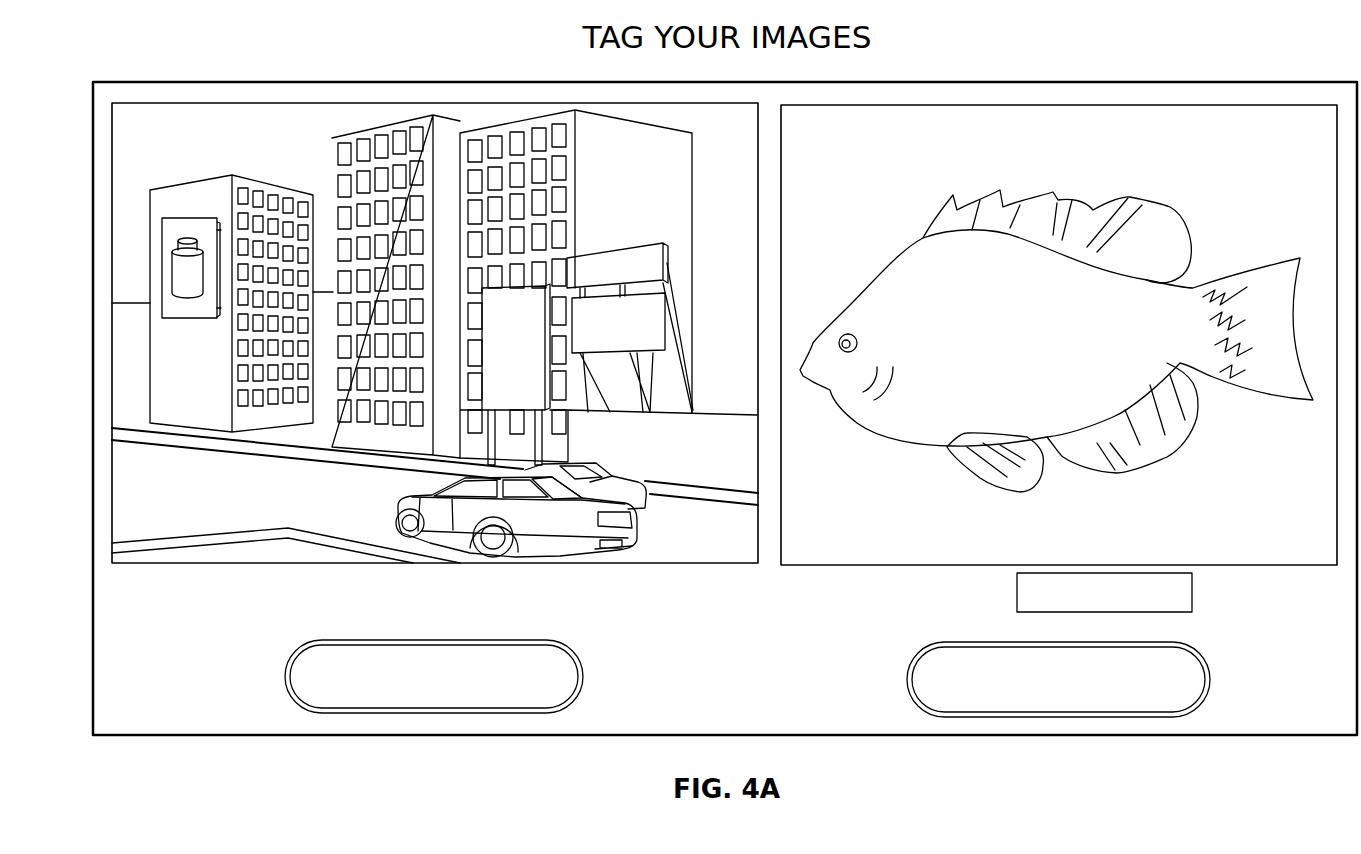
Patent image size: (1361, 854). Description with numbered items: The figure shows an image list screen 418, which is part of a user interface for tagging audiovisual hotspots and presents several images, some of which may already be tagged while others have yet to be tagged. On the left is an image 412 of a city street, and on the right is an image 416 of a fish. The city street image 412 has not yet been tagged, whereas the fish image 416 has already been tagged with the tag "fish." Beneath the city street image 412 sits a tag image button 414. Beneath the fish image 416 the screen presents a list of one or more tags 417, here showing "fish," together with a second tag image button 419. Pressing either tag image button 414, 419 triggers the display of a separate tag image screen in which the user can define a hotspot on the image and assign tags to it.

The city street image 412 is at (673, 563).
The tag image button 414 is at (283, 676).
The fish image 416 is at (1255, 563).
The list of one or more tags 417 is at (905, 592).
The image list screen 418 is at (1110, 762).
The tag image button 419 is at (905, 680).